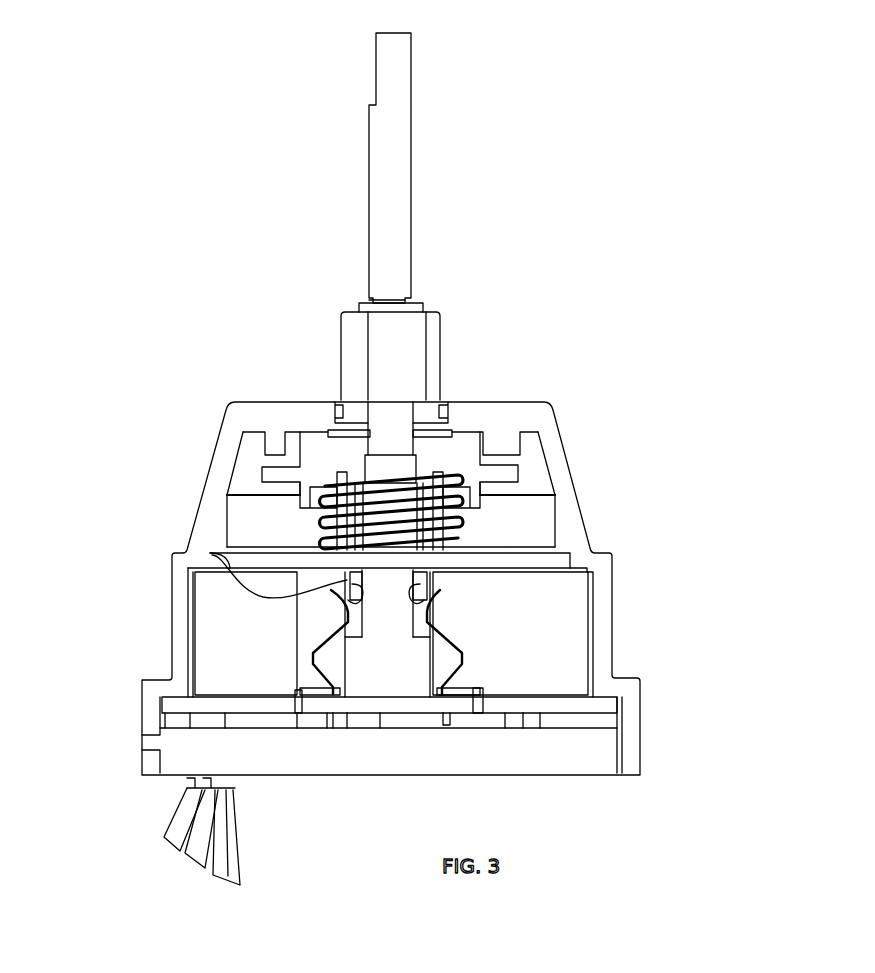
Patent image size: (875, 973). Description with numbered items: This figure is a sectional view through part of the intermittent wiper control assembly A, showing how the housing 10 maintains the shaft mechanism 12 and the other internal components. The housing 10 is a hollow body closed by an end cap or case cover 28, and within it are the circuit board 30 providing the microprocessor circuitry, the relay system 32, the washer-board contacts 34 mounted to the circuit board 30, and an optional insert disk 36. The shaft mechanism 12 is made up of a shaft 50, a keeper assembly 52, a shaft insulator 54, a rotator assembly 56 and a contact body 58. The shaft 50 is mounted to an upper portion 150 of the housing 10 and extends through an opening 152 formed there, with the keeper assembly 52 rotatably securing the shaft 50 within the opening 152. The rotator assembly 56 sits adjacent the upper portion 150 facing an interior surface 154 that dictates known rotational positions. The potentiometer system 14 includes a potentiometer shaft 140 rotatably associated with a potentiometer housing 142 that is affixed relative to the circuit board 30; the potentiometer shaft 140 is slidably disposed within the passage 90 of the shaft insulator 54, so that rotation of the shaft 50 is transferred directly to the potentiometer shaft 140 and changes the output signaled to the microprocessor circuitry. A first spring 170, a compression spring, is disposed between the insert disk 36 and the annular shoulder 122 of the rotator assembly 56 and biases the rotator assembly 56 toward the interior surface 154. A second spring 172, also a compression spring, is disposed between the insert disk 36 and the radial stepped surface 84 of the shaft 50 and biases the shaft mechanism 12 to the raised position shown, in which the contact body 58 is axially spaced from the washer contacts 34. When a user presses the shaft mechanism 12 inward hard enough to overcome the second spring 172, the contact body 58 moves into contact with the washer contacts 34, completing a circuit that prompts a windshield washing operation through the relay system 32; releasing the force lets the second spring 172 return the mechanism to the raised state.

The control assembly A is at (182, 326).
The housing 10 is at (168, 588).
The shaft mechanism 12 is at (347, 272).
The potentiometer system 14 is at (408, 700).
The end cap or case cover 28 is at (455, 710).
The circuit board 30 is at (198, 704).
The relay system 32 is at (290, 634).
The washer-board contacts 34 is at (318, 652).
The insert disk 36 is at (544, 563).
The shaft 50 is at (401, 203).
The keeper assembly 52 is at (349, 358).
The shaft insulator 54 is at (172, 556).
The rotator assembly 56 is at (467, 451).
The contact body 58 is at (393, 620).
The radial stepped surface 84 is at (343, 473).
The passage 90 is at (343, 583).
The annular shoulder 122 is at (455, 485).
The potentiometer shaft 140 is at (500, 767).
The potentiometer housing 142 is at (454, 711).
The upper portion 150 is at (527, 412).
The opening 152 is at (420, 445).
The interior surface 154 is at (283, 433).
The first spring 170 is at (458, 522).
The second spring 172 is at (398, 470).